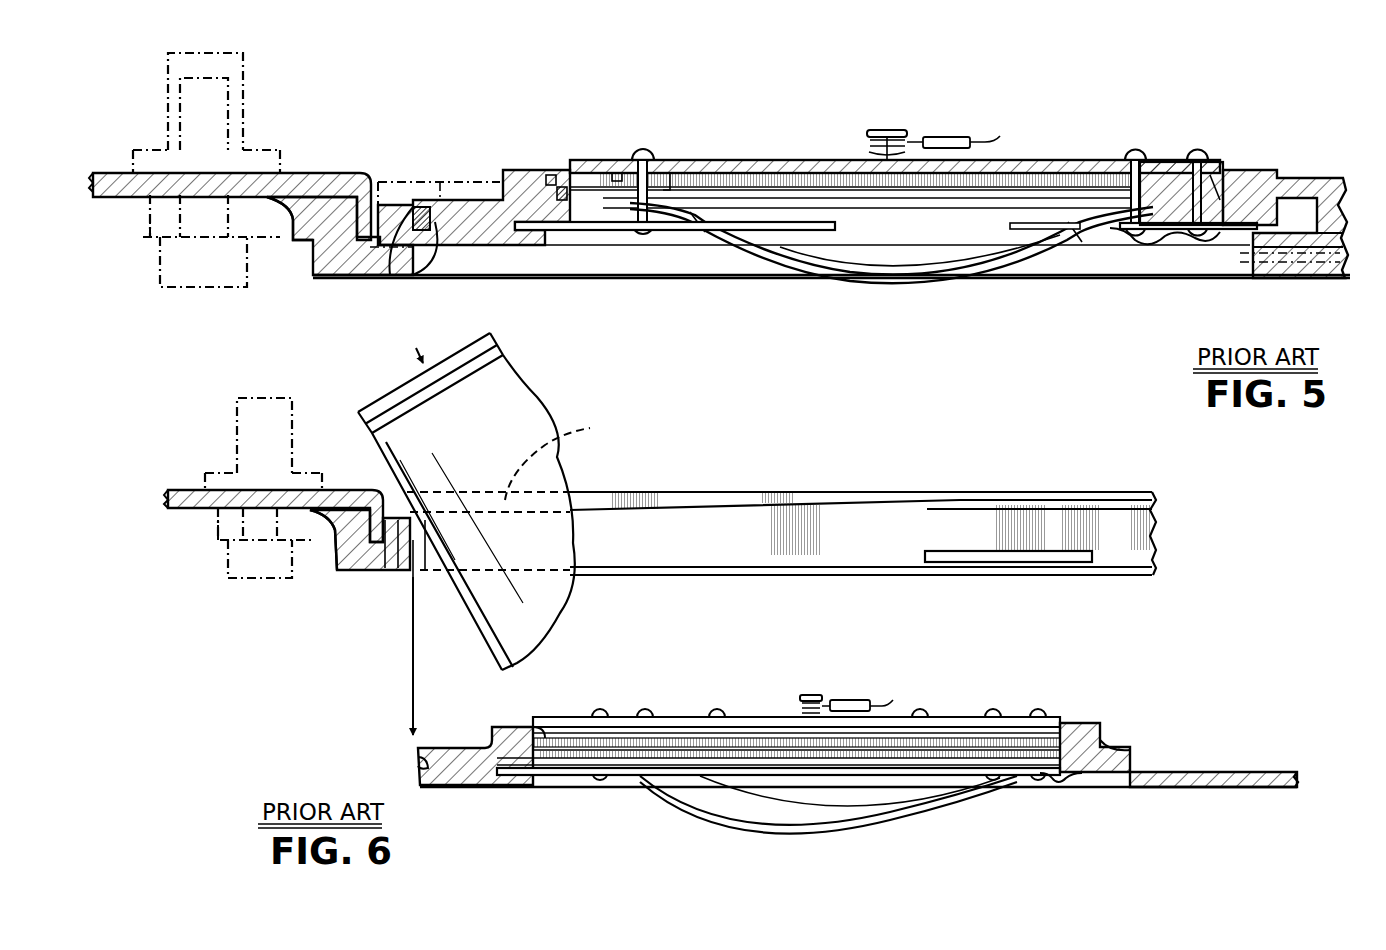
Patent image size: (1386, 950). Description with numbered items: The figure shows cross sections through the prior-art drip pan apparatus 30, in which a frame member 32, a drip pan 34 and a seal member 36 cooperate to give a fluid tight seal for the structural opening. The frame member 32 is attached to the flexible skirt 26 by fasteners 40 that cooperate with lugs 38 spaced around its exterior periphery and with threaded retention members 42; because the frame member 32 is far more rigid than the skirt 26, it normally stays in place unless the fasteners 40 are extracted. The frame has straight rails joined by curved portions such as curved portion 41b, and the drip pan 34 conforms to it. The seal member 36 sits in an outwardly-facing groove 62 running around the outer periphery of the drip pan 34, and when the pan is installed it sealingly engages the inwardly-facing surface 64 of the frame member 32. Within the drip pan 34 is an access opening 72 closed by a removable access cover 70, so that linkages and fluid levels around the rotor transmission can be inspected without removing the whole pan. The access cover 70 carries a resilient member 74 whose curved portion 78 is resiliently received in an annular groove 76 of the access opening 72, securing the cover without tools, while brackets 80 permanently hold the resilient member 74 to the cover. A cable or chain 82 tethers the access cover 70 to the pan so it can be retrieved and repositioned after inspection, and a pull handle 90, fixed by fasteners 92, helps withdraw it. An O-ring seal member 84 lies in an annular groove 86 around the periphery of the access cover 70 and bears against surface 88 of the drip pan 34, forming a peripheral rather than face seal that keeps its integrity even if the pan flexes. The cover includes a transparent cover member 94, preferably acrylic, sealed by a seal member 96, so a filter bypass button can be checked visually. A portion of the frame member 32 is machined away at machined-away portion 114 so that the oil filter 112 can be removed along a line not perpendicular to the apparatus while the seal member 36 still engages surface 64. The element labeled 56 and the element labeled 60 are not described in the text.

In FIG. 5, the skirt 26 is at (290, 172).
In FIG. 6, the skirt 26 is at (178, 490).
In FIG. 5, the drip pan apparatus 30 is at (322, 288).
In FIG. 6, the drip pan apparatus 30 is at (305, 612).
In FIG. 5, the frame member 32 is at (360, 285).
In FIG. 6, the frame member 32 is at (362, 578).
In FIG. 5, the drip pan 34 is at (1272, 170).
In FIG. 6, the drip pan 34 is at (1120, 790).
In FIG. 5, the seal member 36 is at (437, 262).
In FIG. 6, the seal member 36 is at (418, 762).
In FIG. 5, the lug 38 is at (150, 237).
In FIG. 6, the lug 38 is at (218, 520).
In FIG. 5, the fastener 40 is at (196, 290).
In FIG. 6, the fastener 40 is at (228, 590).
In FIG. 5, the curved portion 41b is at (308, 264).
In FIG. 5, the threaded retention member 42 is at (250, 82).
In FIG. 6, the threaded retention member 42 is at (212, 414).
In FIG. 6, the contact plate 56 is at (988, 562).
In FIG. 5, the lid in phantom 60 is at (418, 178).
In FIG. 5, the outwardly-facing groove 62 is at (432, 208).
In FIG. 6, the outwardly-facing groove 62 is at (446, 748).
In FIG. 5, the inwardly-facing surface 64 is at (390, 270).
In FIG. 6, the inwardly-facing surface 64 is at (418, 585).
In FIG. 5, the access cover 70 is at (742, 158).
In FIG. 6, the access cover 70 is at (708, 714).
In FIG. 5, the access opening 72 is at (1226, 164).
In FIG. 6, the access opening 72 is at (1068, 722).
In FIG. 5, the resilient member 74 is at (924, 236).
In FIG. 6, the resilient member 74 is at (886, 778).
In FIG. 5, the annular groove 76 is at (813, 232).
In FIG. 6, the annular groove 76 is at (483, 783).
In FIG. 5, the curved portion 78 is at (882, 238).
In FIG. 6, the curved portion 78 is at (795, 780).
In FIG. 5, the bracket 80 is at (1168, 240).
In FIG. 6, the bracket 80 is at (1040, 788).
In FIG. 5, the cable or chain 82 is at (1000, 136).
In FIG. 6, the cable or chain 82 is at (880, 698).
In FIG. 5, the seal member 84 is at (566, 187).
In FIG. 6, the seal member 84 is at (1110, 746).
In FIG. 5, the annular groove 86 is at (600, 196).
In FIG. 6, the annular groove 86 is at (614, 740).
In FIG. 5, the surface 88 is at (551, 176).
In FIG. 6, the surface 88 is at (522, 730).
In FIG. 5, the pull handle 90 is at (772, 256).
In FIG. 6, the pull handle 90 is at (838, 803).
In FIG. 5, the fastener 92 is at (650, 150).
In FIG. 6, the fastener 92 is at (995, 712).
In FIG. 5, the transparent cover member 94 is at (776, 160).
In FIG. 6, the transparent cover member 94 is at (745, 716).
In FIG. 5, the seal member 96 is at (618, 174).
In FIG. 6, the oil filter 112 is at (540, 396).
In FIG. 5, the machined-away portion 114 is at (440, 180).
In FIG. 6, the machined-away portion 114 is at (590, 428).